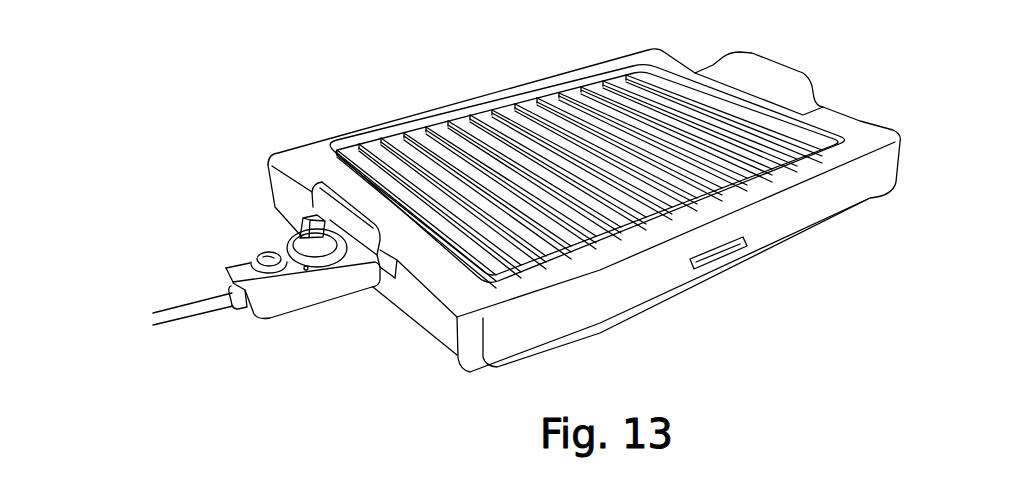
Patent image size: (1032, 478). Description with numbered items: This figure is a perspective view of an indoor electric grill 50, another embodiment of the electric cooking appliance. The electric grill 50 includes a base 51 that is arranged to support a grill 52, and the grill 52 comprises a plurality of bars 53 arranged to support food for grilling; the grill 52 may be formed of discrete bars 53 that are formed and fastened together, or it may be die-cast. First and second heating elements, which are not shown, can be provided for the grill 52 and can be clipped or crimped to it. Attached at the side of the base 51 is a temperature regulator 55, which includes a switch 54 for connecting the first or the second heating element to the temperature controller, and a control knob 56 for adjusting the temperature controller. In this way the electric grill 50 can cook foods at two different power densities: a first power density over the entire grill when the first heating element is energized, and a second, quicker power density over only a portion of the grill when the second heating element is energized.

The indoor electric grill 50 is at (496, 208).
The base 51 is at (823, 193).
The grill 52 is at (508, 156).
The bars 53 is at (587, 93).
The switch 54 is at (260, 259).
The temperature regulator 55 is at (233, 296).
The control knob 56 is at (301, 237).